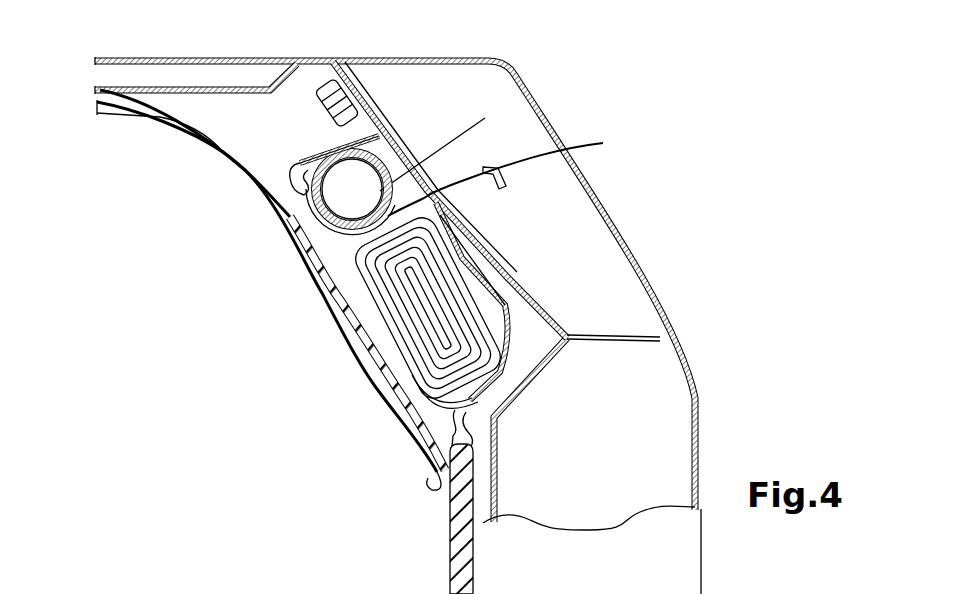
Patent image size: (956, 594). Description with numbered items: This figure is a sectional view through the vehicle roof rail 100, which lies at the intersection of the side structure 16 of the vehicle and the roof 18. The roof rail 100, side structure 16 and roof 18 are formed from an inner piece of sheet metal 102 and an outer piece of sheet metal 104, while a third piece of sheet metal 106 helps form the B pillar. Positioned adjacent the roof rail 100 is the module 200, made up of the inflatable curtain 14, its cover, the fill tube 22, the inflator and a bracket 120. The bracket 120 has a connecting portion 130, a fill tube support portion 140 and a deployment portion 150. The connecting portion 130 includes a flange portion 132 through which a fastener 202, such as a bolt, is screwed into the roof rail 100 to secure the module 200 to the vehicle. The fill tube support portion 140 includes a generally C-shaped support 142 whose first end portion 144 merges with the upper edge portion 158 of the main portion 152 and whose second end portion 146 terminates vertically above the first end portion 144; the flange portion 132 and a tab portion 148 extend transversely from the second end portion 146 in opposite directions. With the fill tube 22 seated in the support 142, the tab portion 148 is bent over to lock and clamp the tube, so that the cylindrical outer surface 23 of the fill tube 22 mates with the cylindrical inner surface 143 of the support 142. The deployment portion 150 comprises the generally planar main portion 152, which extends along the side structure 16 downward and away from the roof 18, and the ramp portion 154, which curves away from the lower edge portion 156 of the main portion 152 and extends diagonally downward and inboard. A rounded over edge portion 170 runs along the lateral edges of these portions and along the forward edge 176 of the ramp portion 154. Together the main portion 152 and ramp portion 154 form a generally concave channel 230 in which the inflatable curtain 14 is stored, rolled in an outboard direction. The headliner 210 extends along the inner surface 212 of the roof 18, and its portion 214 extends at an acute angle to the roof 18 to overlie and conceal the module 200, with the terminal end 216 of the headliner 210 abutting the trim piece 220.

The inflatable curtain 14 is at (484, 336).
The side structure 16 is at (556, 68).
The roof 18 is at (238, 50).
The fill tube 22 is at (321, 199).
The cylindrical outer surface 23 is at (293, 168).
The vehicle roof rail 100 is at (411, 304).
The inner piece of sheet metal 102 is at (400, 147).
The outer piece of sheet metal 104 is at (654, 278).
The third piece of sheet metal 106 is at (525, 382).
The bracket 120 is at (487, 283).
The connecting portion 130 is at (344, 67).
The flange portion 132 is at (312, 67).
The fill tube support portion 140 is at (281, 194).
The support 142 is at (305, 214).
The inner surface 143 is at (290, 178).
The first end portion 144 is at (518, 171).
The second end portion 146 is at (382, 135).
The tab portion 148 is at (456, 144).
The deployment portion 150 is at (455, 394).
The main portion 152 is at (480, 270).
The ramp portion 154 is at (430, 370).
The lower edge portion 156 is at (512, 318).
The upper edge portion 158 is at (445, 268).
The rounded over edge portion 170 is at (447, 440).
The forward edge 176 is at (447, 424).
The module 200 is at (285, 342).
The fastener 202 is at (330, 108).
The headliner 210 is at (217, 155).
The inner surface 212 is at (214, 95).
The portion 214 is at (333, 287).
The terminal end 216 is at (436, 490).
The trim piece 220 is at (462, 508).
The channel 230 is at (510, 352).